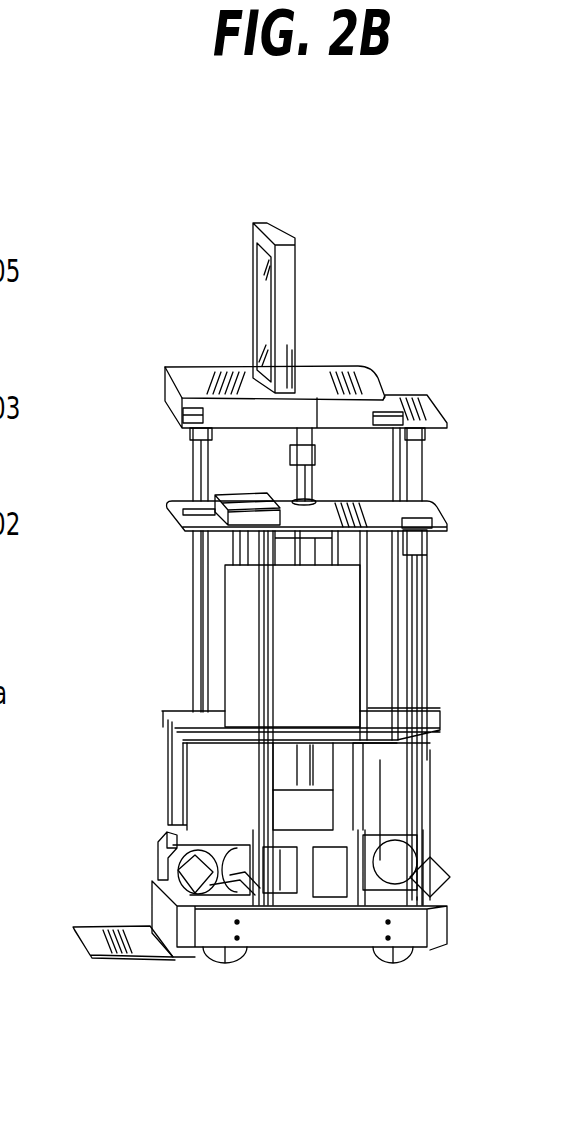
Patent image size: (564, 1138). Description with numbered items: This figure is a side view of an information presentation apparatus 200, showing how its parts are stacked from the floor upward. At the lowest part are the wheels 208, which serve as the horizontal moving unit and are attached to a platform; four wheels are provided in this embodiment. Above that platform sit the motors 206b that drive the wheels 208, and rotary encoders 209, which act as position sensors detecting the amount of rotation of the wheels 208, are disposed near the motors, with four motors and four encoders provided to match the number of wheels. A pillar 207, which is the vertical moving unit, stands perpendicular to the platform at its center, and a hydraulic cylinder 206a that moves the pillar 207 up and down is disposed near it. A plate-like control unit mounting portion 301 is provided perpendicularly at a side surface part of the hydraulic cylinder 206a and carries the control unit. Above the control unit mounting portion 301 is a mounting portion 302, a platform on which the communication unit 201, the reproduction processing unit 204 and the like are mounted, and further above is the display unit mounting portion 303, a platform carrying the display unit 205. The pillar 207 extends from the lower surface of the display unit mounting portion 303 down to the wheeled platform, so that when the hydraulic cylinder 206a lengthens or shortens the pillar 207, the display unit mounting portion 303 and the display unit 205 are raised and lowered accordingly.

The information presentation apparatus 200 is at (209, 216).
The display unit 205 is at (253, 306).
The display unit mounting portion 303 is at (168, 392).
The communication unit 201 is at (237, 500).
The pillar 207 is at (312, 477).
The mounting portion 302 is at (193, 515).
The reproduction processing unit 204 is at (227, 513).
The control unit mounting portion 301 is at (440, 688).
The hydraulic cylinder 206a is at (293, 805).
The motors 206b is at (213, 880).
The wheels 208 is at (237, 951).
The rotary encoders 209 is at (243, 880).